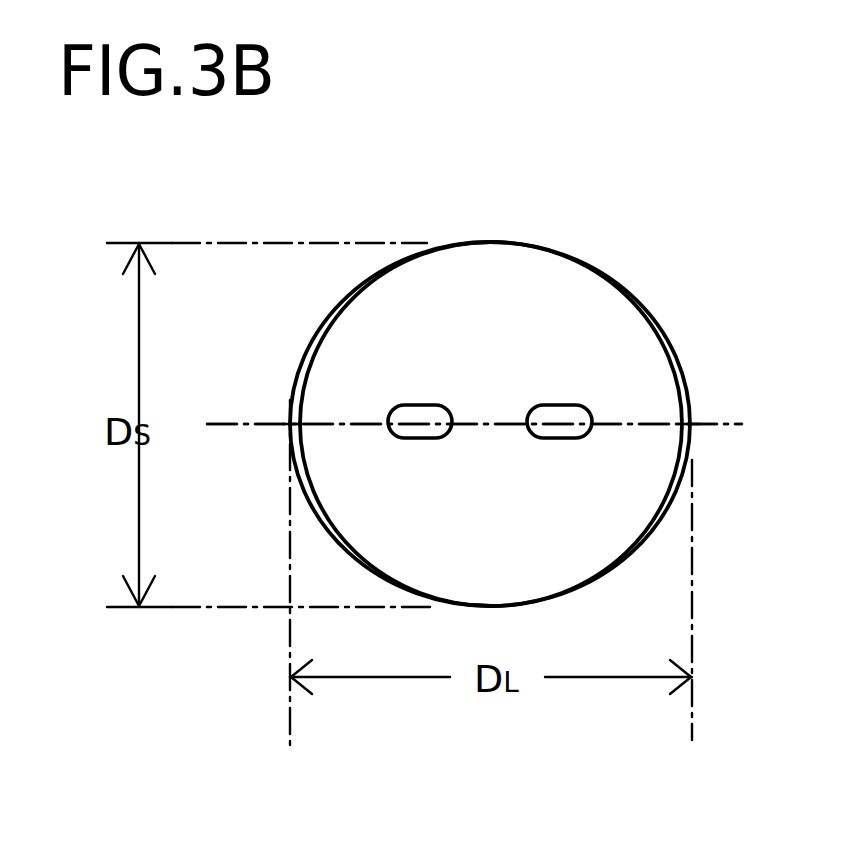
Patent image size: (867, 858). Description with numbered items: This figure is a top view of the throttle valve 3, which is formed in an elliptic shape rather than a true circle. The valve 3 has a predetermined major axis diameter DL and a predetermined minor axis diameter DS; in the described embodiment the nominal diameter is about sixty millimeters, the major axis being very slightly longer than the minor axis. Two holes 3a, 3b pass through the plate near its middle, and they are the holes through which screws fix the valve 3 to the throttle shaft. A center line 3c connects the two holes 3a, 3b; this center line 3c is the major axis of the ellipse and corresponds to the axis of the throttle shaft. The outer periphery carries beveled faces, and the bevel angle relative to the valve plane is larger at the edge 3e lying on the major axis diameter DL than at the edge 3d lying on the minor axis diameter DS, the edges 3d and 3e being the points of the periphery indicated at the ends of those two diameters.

The throttle valve 3 is at (578, 258).
The hole 3a is at (416, 414).
The hole 3b is at (558, 412).
The center line 3c is at (225, 421).
The edge in the minor axis diameter 3d is at (487, 242).
The edge in the major axis diameter 3e is at (284, 427).